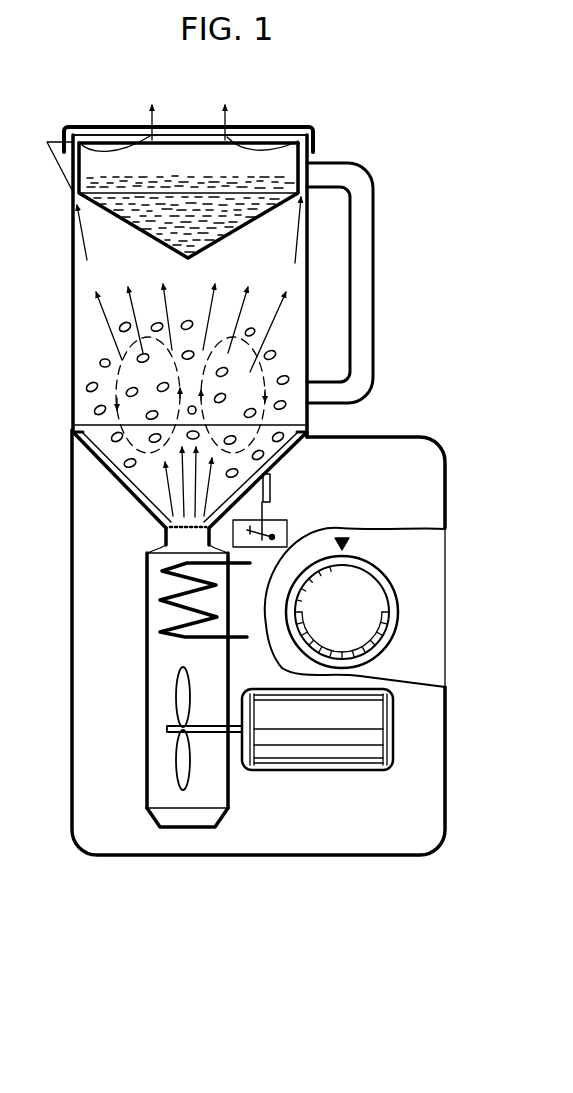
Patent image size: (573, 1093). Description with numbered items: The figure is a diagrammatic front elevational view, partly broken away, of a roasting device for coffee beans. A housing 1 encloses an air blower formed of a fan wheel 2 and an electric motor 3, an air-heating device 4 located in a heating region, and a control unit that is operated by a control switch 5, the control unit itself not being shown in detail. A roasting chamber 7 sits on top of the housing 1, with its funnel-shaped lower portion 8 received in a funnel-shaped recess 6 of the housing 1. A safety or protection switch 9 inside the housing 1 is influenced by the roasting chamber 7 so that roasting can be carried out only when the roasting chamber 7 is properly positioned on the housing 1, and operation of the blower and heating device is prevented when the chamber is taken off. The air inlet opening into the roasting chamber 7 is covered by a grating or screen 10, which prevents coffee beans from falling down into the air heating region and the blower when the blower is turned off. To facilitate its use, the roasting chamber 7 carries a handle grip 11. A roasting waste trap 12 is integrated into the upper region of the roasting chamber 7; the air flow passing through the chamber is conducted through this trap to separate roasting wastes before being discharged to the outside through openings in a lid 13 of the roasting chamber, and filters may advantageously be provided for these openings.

The housing 1 is at (435, 646).
The fan wheel 2 is at (180, 695).
The electric motor 3 is at (360, 755).
The air-heating device 4 is at (160, 572).
The control switch 5 is at (370, 594).
The funnel-shaped recess 6 is at (87, 458).
The roasting chamber 7 is at (73, 337).
The funnel-shaped lower portion 8 is at (73, 432).
The safety or protection switch 9 is at (283, 527).
The grating or screen 10 is at (165, 532).
The handle grip 11 is at (367, 258).
The roasting waste trap 12 is at (72, 194).
The lid 13 is at (277, 127).